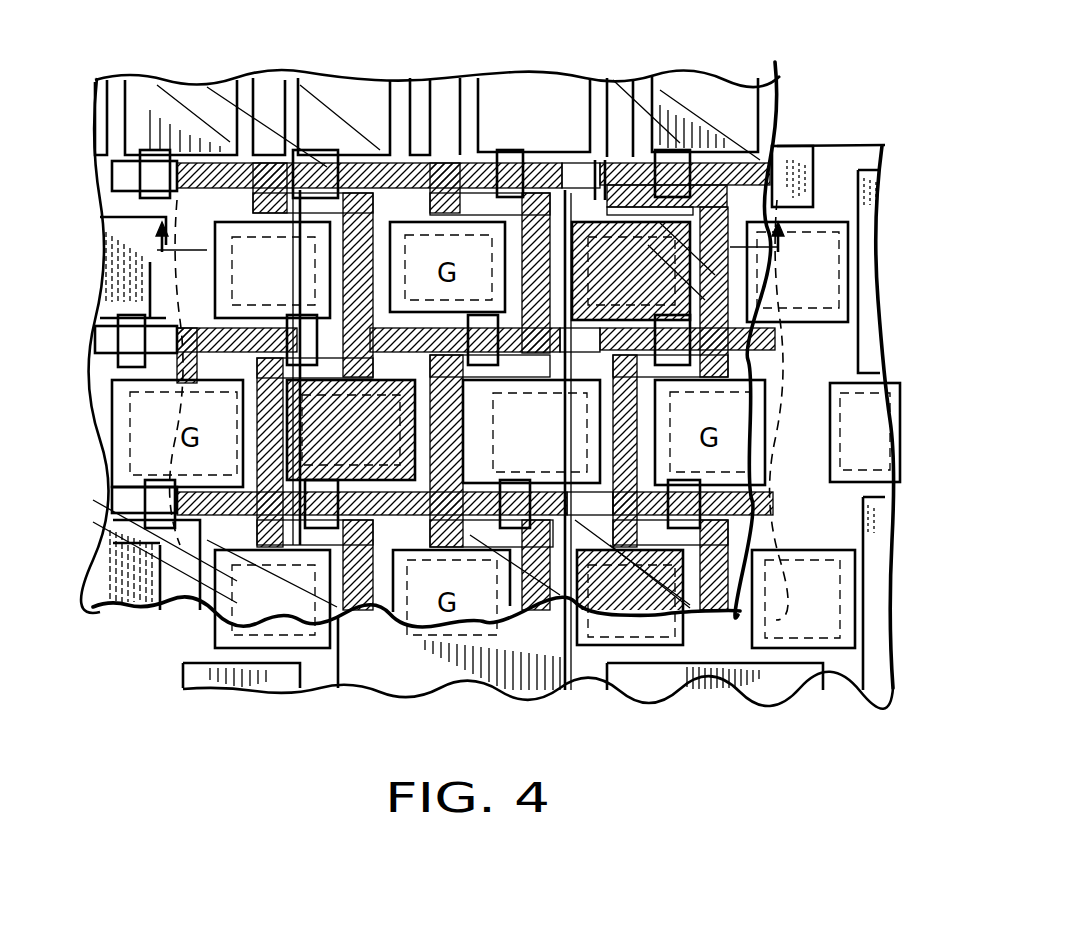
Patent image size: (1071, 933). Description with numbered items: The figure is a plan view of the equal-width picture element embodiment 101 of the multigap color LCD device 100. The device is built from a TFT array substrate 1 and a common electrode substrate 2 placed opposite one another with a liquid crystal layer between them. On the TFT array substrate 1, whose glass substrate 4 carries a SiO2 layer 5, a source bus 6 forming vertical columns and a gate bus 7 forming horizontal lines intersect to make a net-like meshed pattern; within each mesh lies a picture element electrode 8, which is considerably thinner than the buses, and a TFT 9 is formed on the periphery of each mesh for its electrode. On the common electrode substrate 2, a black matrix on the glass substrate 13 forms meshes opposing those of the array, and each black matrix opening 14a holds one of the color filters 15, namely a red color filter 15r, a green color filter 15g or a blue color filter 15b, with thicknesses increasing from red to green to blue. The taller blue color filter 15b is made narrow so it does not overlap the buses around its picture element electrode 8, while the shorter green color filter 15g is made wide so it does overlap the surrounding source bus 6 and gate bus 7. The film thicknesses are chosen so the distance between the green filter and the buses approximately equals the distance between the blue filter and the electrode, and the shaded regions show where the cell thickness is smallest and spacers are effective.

The TFT array substrate 1 is at (122, 627).
The common electrode substrate 2 is at (207, 690).
The glass substrate 4 is at (787, 78).
The SiO2 layer 5 is at (464, 410).
The source bus 6 is at (292, 100).
The gate bus 7 is at (770, 170).
The picture element electrode 8 is at (122, 95).
The TFT 9 is at (585, 190).
The glass substrate 13 is at (866, 143).
The black matrix opening 14a is at (885, 398).
The color filters 15 is at (852, 246).
The blue color filter 15b is at (863, 340).
The green color filter 15g is at (583, 190).
The red color filter 15r is at (218, 632).
The multigap color LCD device 100 is at (725, 718).
The equal-width picture element embodiment 101 is at (672, 738).